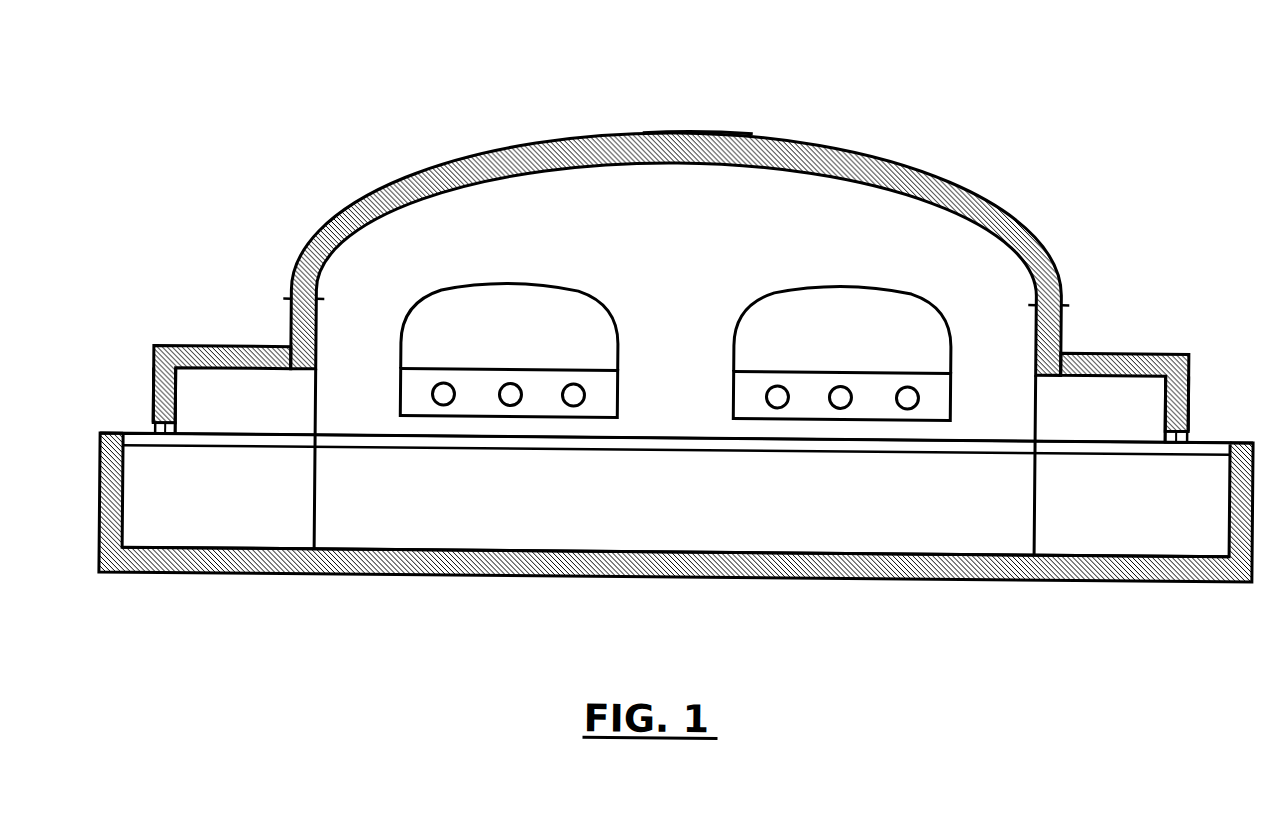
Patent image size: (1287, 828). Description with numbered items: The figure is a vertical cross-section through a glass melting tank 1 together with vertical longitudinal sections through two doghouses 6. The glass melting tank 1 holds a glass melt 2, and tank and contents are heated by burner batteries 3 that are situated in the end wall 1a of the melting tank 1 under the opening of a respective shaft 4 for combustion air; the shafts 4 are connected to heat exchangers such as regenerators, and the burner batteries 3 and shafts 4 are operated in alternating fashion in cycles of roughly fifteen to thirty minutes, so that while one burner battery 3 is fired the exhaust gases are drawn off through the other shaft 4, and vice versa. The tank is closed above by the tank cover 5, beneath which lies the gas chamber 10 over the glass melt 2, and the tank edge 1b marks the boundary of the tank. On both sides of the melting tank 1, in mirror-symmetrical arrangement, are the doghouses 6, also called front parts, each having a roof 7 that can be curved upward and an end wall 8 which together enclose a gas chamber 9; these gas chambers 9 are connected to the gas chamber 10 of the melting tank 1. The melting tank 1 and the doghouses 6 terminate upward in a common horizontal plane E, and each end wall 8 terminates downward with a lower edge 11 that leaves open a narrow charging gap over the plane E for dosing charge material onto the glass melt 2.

The glass melting tank 1 is at (681, 580).
The end wall 1a is at (836, 232).
The tank edge 1b is at (679, 436).
The glass melt 2 is at (692, 516).
The burner batteries 3 is at (392, 392).
The shaft 4 is at (524, 351).
The tank cover 5 is at (695, 131).
The doghouses 6 is at (213, 580).
The roof 7 is at (222, 347).
The end wall 8 is at (150, 380).
The gas chamber 9 is at (258, 398).
The gas chamber 10 is at (690, 265).
The lower edge 11 is at (171, 442).
The plane E is at (117, 430).